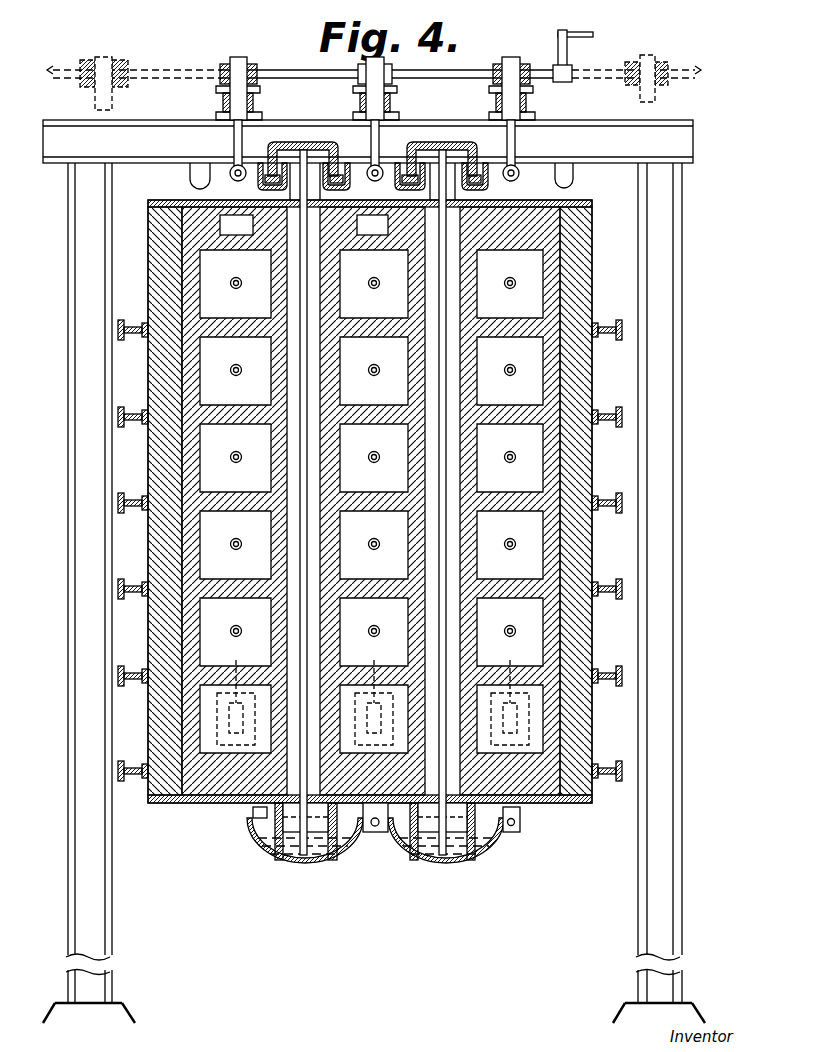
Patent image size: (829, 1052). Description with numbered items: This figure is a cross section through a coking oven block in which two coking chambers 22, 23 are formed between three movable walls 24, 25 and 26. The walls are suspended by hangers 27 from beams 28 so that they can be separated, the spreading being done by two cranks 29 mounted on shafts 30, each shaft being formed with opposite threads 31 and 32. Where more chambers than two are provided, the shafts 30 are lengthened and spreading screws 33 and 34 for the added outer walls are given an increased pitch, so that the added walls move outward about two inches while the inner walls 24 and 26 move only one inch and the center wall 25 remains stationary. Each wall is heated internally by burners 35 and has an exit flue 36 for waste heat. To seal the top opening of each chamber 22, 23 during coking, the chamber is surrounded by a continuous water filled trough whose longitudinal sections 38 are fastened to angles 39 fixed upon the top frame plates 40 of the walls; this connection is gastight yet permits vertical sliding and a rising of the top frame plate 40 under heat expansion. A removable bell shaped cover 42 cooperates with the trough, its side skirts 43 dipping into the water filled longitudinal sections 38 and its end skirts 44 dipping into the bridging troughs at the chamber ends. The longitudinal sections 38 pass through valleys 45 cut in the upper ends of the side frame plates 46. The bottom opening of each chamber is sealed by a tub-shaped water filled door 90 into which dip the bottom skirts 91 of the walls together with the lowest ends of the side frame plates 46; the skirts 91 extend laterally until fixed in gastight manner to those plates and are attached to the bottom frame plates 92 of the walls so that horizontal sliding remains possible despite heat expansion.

The coking chamber 22 is at (292, 550).
The coking chamber 23 is at (455, 578).
The movable wall 24 is at (200, 492).
The movable wall 25 is at (338, 545).
The movable wall 26 is at (552, 468).
The hanger 27 is at (236, 132).
The beam 28 is at (218, 90).
The crank 29 is at (568, 55).
The shaft 30 is at (446, 70).
The thread 31 is at (235, 60).
The thread 32 is at (514, 60).
The spreading screw 33 is at (90, 62).
The spreading screw 34 is at (660, 66).
The burner 35 is at (510, 289).
The exit flue 36 is at (373, 691).
The longitudinal trough section 38 is at (262, 203).
The angle 39 is at (262, 180).
The top frame plate 40 is at (190, 200).
The bell shaped cover 42 is at (318, 145).
The side skirt 43 is at (270, 168).
The end skirt 44 is at (232, 162).
The valley 45 is at (198, 172).
The side frame plate 46 is at (584, 200).
The tub-shaped water filled door 90 is at (312, 864).
The bottom skirt 91 is at (274, 852).
The bottom frame plate 92 is at (250, 804).